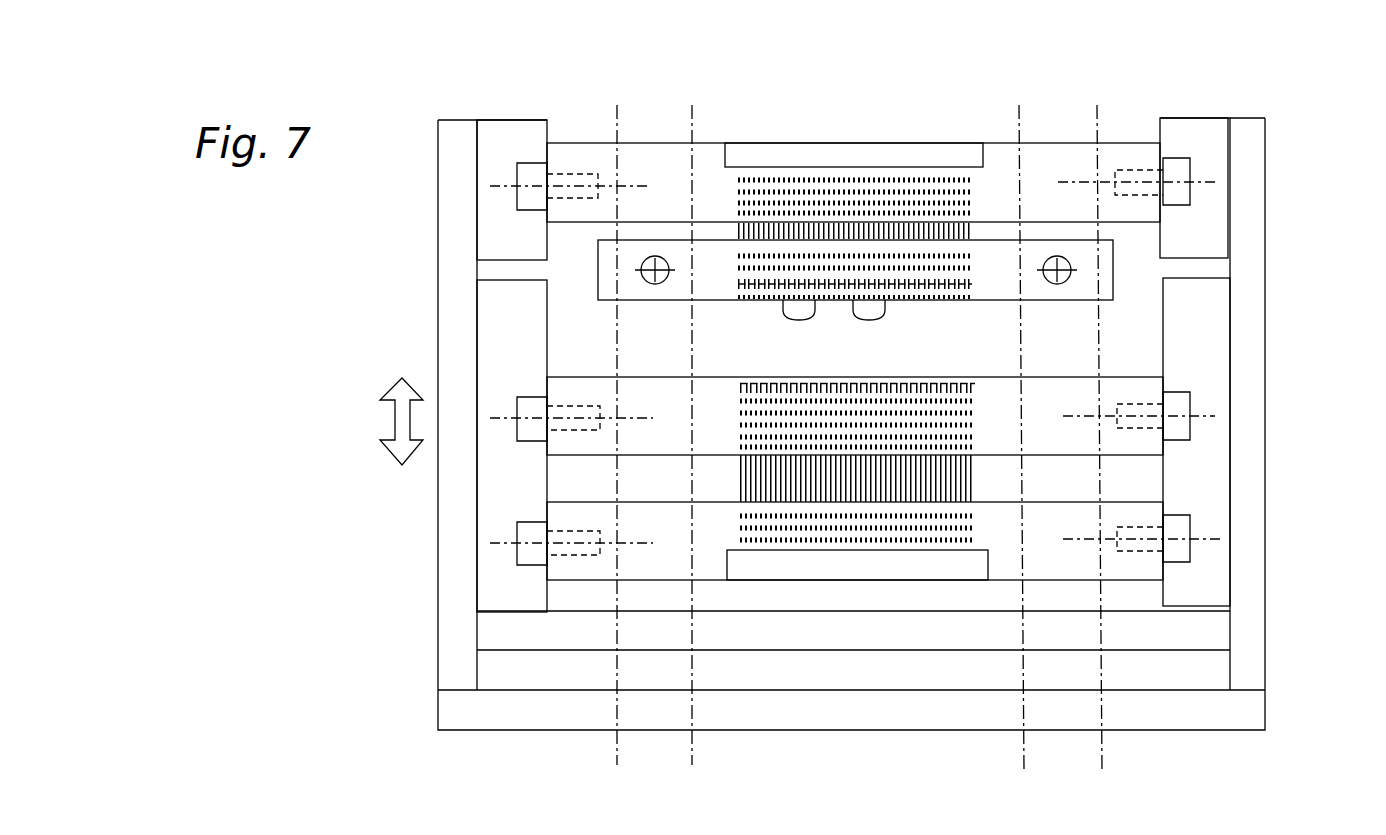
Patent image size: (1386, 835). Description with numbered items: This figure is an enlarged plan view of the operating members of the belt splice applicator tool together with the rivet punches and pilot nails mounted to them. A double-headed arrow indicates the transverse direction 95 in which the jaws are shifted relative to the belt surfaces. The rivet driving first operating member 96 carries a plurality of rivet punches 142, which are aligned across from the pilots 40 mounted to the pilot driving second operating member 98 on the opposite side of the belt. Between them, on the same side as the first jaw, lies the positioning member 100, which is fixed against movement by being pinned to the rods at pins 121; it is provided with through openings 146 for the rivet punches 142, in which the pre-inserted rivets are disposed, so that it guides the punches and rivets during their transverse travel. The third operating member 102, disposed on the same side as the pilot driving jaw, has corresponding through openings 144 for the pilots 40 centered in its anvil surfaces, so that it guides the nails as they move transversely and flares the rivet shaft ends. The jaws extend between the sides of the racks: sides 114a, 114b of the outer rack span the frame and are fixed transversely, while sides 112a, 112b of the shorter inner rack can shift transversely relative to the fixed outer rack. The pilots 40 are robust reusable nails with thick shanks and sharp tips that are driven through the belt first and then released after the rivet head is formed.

The transverse direction 95 is at (395, 425).
The first operating member 96 is at (1035, 180).
The second operating member 98 is at (653, 565).
The pilot 40 is at (740, 480).
The positioning member 100 is at (1100, 268).
The third operating member 102 is at (1133, 392).
The inner rack side 112a is at (510, 500).
The inner rack side 112b is at (1197, 582).
The outer rack side 114a is at (490, 207).
The outer rack side 114b is at (1198, 158).
The pins 121 is at (660, 258).
The rivet punches 142 is at (735, 225).
The through openings 144 is at (752, 378).
The through openings 146 is at (790, 318).